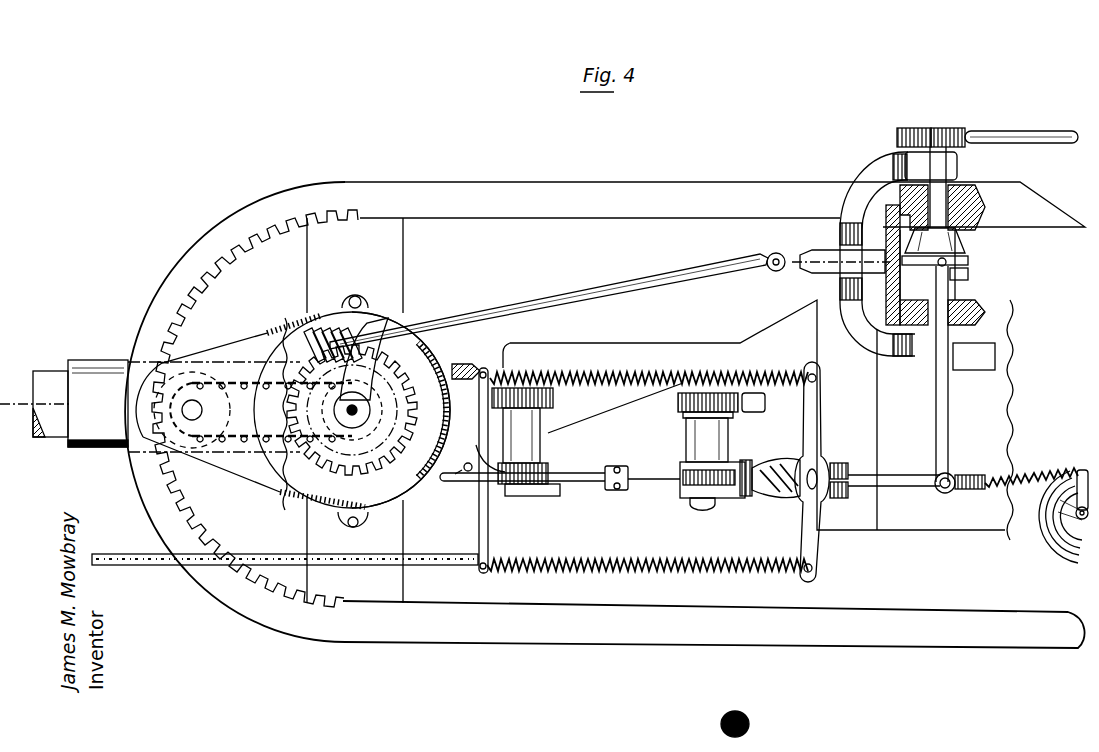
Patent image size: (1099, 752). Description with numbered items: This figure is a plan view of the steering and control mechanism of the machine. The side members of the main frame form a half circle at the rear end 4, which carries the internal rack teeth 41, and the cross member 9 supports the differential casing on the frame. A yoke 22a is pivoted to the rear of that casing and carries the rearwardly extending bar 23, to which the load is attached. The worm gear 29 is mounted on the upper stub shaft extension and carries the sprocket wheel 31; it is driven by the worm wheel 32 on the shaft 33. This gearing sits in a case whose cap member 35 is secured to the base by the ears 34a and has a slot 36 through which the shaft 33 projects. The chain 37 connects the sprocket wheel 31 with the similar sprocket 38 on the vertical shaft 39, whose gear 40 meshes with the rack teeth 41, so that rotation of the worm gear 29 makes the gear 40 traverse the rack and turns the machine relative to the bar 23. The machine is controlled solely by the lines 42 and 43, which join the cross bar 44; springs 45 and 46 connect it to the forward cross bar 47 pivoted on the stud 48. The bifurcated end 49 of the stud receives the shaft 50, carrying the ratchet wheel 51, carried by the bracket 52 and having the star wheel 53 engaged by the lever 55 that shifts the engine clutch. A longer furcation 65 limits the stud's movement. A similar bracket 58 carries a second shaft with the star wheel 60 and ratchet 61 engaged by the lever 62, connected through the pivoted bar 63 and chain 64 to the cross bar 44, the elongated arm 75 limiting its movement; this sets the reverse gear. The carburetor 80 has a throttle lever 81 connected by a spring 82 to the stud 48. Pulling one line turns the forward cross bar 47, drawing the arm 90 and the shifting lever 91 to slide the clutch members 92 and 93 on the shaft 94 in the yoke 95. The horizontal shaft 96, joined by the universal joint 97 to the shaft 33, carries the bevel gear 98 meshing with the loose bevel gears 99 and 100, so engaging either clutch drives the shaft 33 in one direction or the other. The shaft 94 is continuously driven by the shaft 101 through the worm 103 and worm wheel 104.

The half circle rear end 4 is at (152, 487).
The cross member 9 is at (360, 529).
The yoke 22a is at (98, 403).
The rearwardly extending bar 23 is at (35, 404).
The worm gear 29 is at (367, 465).
The sprocket wheel 31 is at (325, 412).
The worm wheel 32 is at (326, 332).
The shaft 33 is at (480, 310).
The ears 34a is at (342, 512).
The cap member 35 is at (238, 358).
The slot 36 is at (432, 352).
The chain 37 is at (288, 445).
The sprocket 38 is at (215, 410).
The vertical shaft 39 is at (197, 385).
The gear 40 is at (192, 422).
The rack teeth 41 is at (215, 548).
The line 42 is at (426, 554).
The line 43 is at (472, 364).
The cross bar 44 is at (482, 528).
The spring 45 is at (636, 562).
The spring 46 is at (598, 370).
The forward cross bar 47 is at (822, 422).
The stud 48 is at (758, 496).
The bifurcated end 49 is at (702, 506).
The shaft 50 is at (700, 445).
The ratchet wheel 51 is at (680, 482).
The bracket 52 is at (688, 420).
The star wheel 53 is at (678, 398).
The lever 55 is at (754, 393).
The bracket 58 is at (540, 440).
The star wheel 60 is at (526, 388).
The ratchet 61 is at (552, 472).
The lever 62 is at (548, 486).
The pivoted bar 63 is at (594, 490).
The chain 64 is at (460, 470).
The longer furcation 65 is at (684, 470).
The elongated arm 75 is at (475, 450).
The carburetor 80 is at (1046, 522).
The lever 81 is at (1083, 468).
The spring 82 is at (1030, 470).
The arm 90 is at (906, 484).
The shifting lever 91 is at (949, 416).
The clutch member 92 is at (962, 242).
The clutch member 93 is at (968, 276).
The shaft 94 is at (950, 202).
The yoke 95 is at (862, 182).
The horizontal shaft 96 is at (795, 268).
The universal joint 97 is at (770, 254).
The bevel gear 98 is at (893, 212).
The bevel gear 99 is at (978, 214).
The bevel gear 100 is at (978, 318).
The shaft 101 is at (1045, 131).
The worm 103 is at (960, 128).
The worm wheel 104 is at (910, 128).